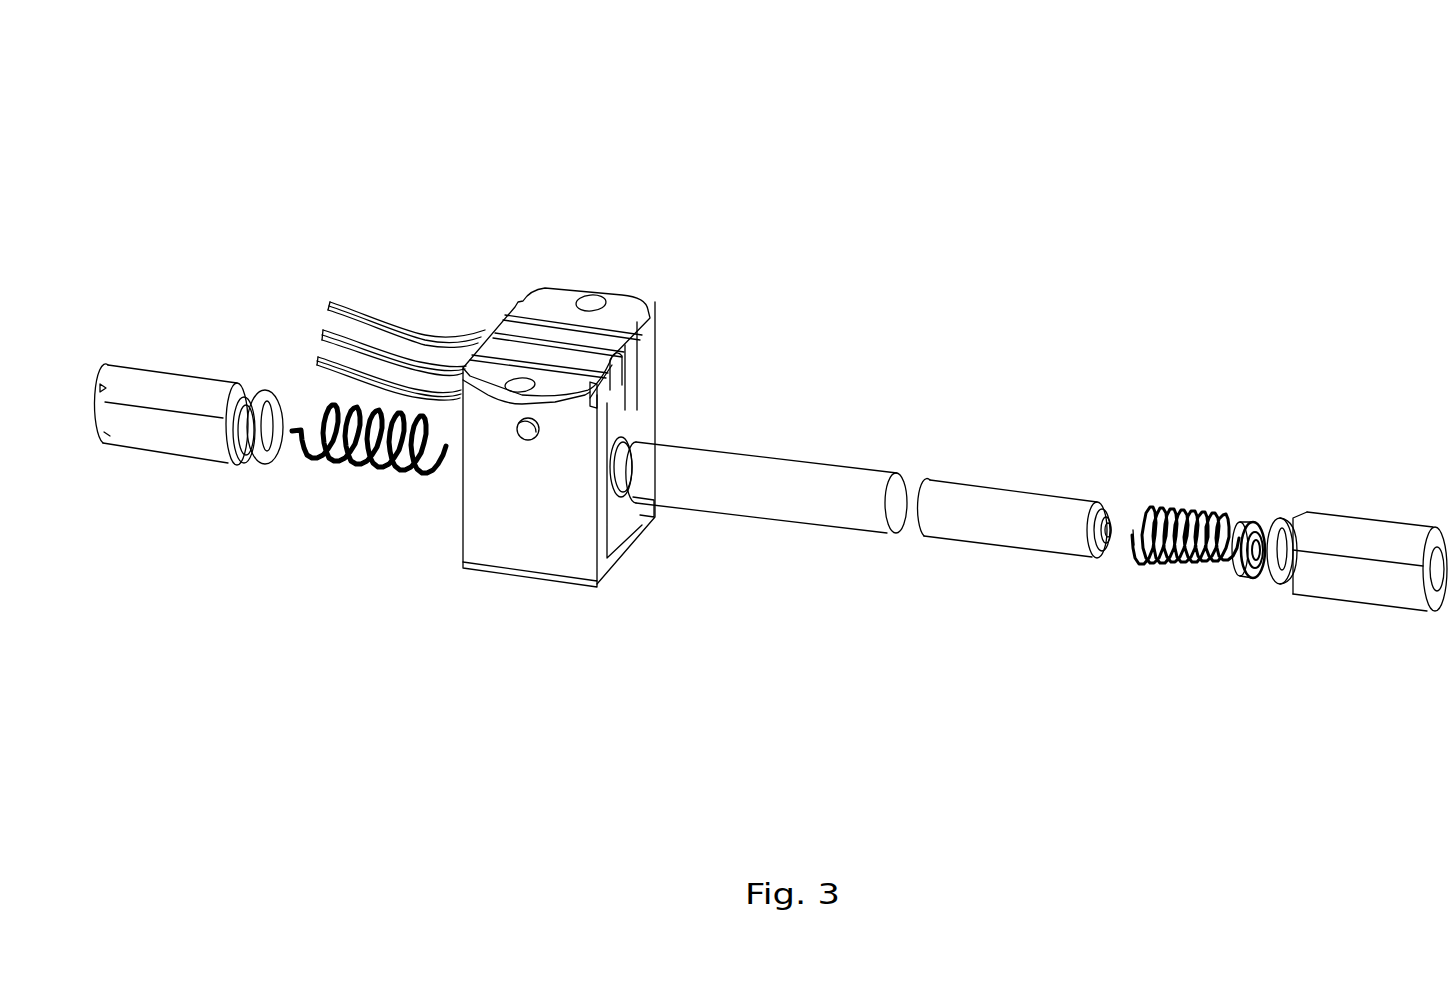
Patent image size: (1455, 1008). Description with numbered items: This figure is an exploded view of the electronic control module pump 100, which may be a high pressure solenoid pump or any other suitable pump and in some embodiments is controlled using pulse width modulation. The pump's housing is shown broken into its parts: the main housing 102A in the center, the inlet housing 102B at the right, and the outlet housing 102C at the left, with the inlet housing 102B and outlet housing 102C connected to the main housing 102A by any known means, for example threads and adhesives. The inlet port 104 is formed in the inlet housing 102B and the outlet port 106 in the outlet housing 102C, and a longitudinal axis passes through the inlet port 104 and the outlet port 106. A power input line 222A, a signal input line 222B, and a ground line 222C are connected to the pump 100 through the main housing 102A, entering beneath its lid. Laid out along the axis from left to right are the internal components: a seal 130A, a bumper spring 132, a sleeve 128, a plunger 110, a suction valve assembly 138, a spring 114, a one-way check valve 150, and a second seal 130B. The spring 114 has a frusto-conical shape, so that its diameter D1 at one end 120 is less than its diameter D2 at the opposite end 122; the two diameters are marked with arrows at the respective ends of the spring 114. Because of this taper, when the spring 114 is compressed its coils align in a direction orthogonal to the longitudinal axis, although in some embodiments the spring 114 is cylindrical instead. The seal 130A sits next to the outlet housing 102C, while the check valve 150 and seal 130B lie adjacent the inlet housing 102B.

The electronic control module pump 100 is at (1018, 88).
The main housing 102A is at (533, 576).
The inlet housing 102B is at (1393, 578).
The outlet housing 102C is at (211, 380).
The inlet port 104 is at (1437, 567).
The outlet port 106 is at (92, 372).
The plunger 110 is at (983, 492).
The spring 114 is at (1200, 514).
The end of spring 120 is at (1230, 520).
The end of spring 122 is at (1163, 507).
The sleeve 128 is at (708, 460).
The seal 130A is at (266, 390).
The seal 130B is at (1283, 517).
The bumper spring 132 is at (370, 468).
The suction valve assembly 138 is at (1119, 506).
The one-way check valve 150 is at (1258, 579).
The power input line 222A is at (353, 310).
The signal input line 222B is at (378, 357).
The ground line 222C is at (423, 372).
The diameter D1 is at (1242, 485).
The diameter D2 is at (1145, 465).